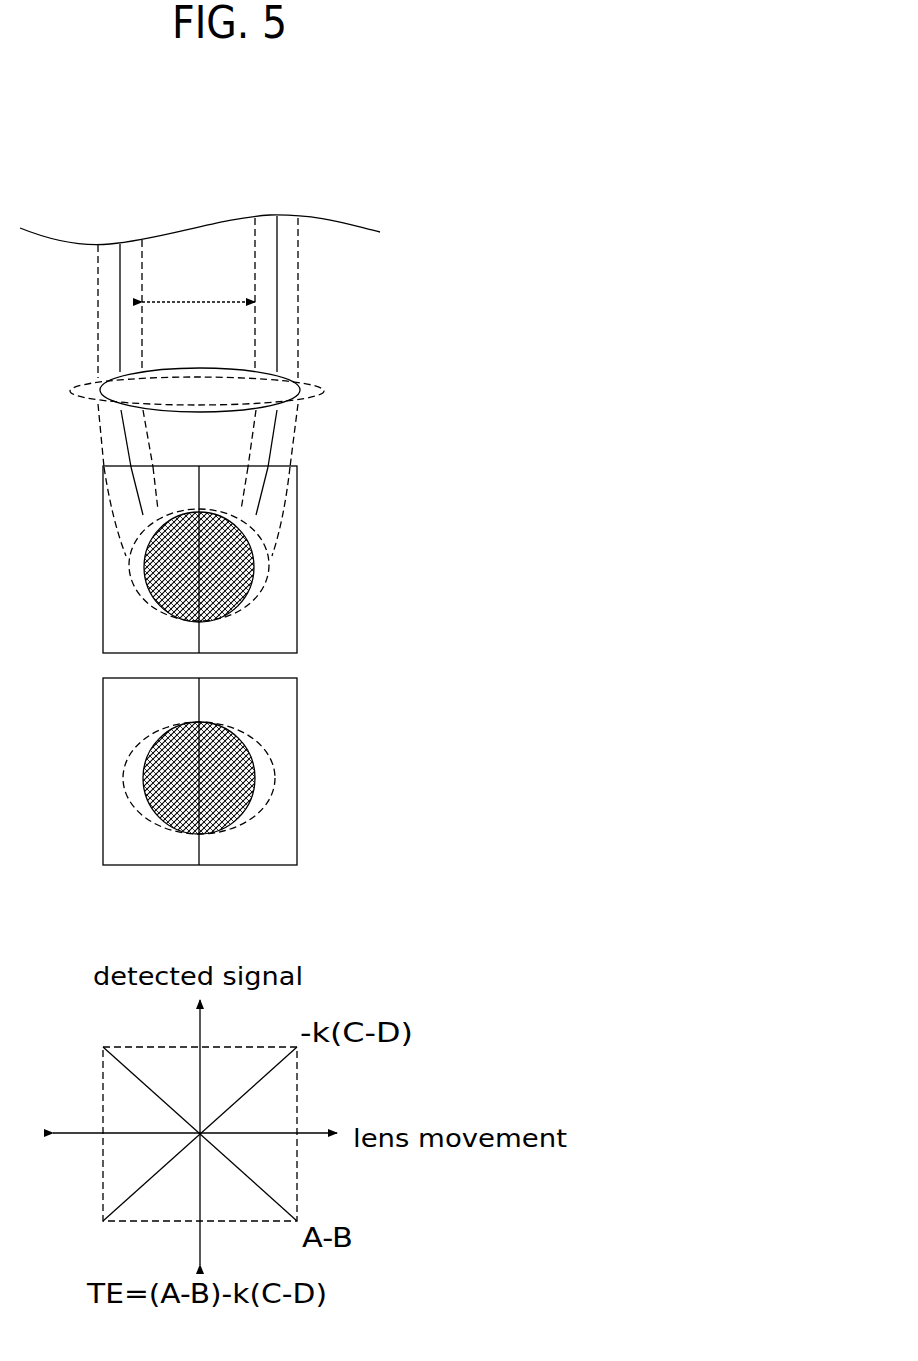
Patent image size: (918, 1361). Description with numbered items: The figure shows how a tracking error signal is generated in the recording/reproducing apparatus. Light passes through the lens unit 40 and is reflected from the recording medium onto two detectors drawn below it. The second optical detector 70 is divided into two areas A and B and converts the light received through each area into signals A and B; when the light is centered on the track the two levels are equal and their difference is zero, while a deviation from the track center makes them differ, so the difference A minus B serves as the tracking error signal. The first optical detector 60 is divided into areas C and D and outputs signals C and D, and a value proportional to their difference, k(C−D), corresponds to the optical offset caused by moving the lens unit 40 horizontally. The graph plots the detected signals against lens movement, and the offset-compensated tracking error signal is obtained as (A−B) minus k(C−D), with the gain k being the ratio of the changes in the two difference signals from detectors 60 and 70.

The lens unit 40 is at (300, 380).
The second optical detector 70 is at (297, 555).
The first optical detector 60 is at (297, 765).